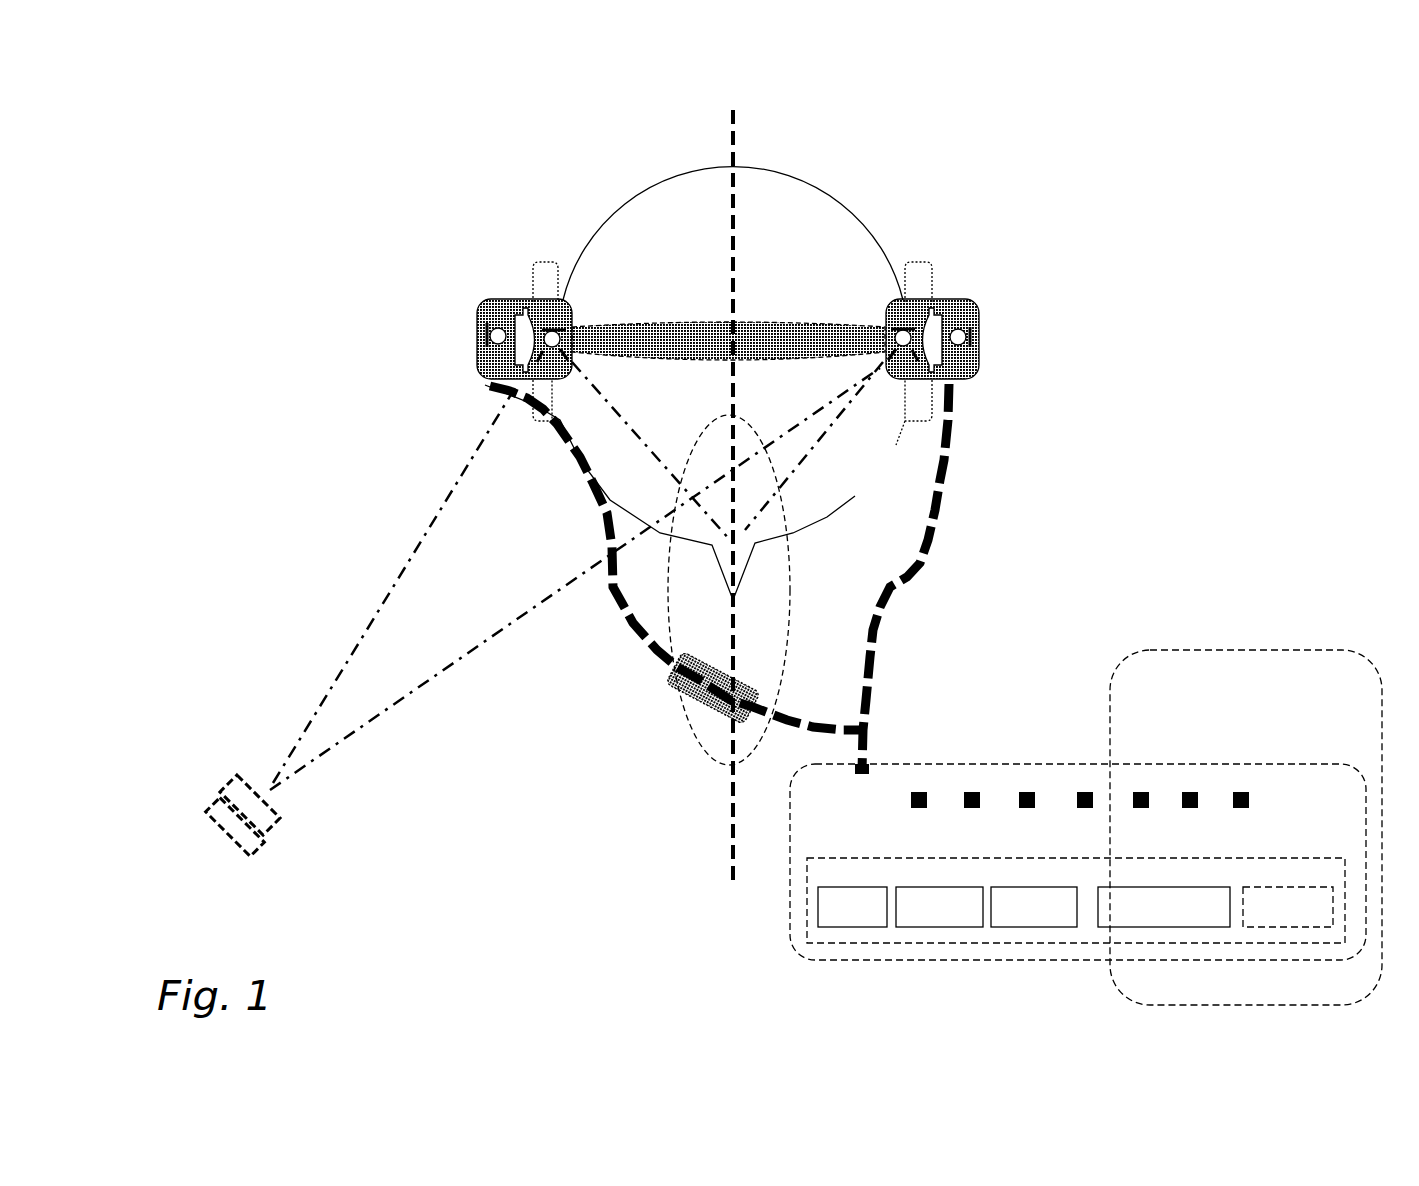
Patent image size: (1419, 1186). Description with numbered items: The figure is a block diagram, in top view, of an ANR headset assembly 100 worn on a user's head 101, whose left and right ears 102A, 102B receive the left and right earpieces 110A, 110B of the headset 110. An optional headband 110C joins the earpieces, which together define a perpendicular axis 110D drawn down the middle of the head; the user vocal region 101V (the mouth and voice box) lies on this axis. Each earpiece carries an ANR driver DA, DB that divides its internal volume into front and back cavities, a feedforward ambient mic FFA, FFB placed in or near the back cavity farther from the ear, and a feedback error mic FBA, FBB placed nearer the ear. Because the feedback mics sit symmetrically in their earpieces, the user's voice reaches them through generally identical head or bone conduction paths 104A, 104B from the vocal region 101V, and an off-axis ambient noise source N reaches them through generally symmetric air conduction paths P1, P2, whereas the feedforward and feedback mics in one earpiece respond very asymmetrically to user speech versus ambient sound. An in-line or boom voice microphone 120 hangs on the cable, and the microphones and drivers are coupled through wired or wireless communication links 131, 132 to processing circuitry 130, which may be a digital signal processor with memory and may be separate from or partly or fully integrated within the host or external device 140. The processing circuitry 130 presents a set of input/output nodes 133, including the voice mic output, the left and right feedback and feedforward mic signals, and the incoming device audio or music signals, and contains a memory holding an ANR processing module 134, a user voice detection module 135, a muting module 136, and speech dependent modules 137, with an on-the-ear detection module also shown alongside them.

The ANR headset assembly 100 is at (262, 185).
The user head 101 is at (840, 195).
The user voice / mouth region 101V is at (793, 578).
The left ear 102A is at (546, 262).
The right ear 102B is at (918, 262).
The body conduction path 104A is at (624, 420).
The body conduction path 104B is at (812, 448).
The headset 110 is at (475, 296).
The left earpiece 110A is at (495, 352).
The right earpiece 110B is at (960, 345).
The headband 110C is at (703, 326).
The perpendicular axis 110D is at (731, 155).
The voice microphone 120 is at (680, 695).
The processing circuitry 130 is at (1002, 851).
The communication link 131 is at (612, 637).
The communication link 132 is at (920, 597).
The input/output nodes 133 is at (1000, 737).
The ANR processing module 134 is at (840, 927).
The user voice detection module 135 is at (940, 927).
The muting module 136 is at (1022, 927).
The speech dependent modules 137 is at (1118, 927).
The host device 140 is at (1225, 662).
The ambient noise source N is at (212, 802).
The air conduction path P1 is at (340, 676).
The air conduction path P2 is at (472, 648).
The feedback mic FBA is at (556, 334).
The feedback mic FBB is at (897, 333).
The feedforward mic FFA is at (490, 346).
The feedforward mic FFB is at (962, 345).
The ANR driver DA is at (522, 343).
The ANR driver DB is at (938, 338).